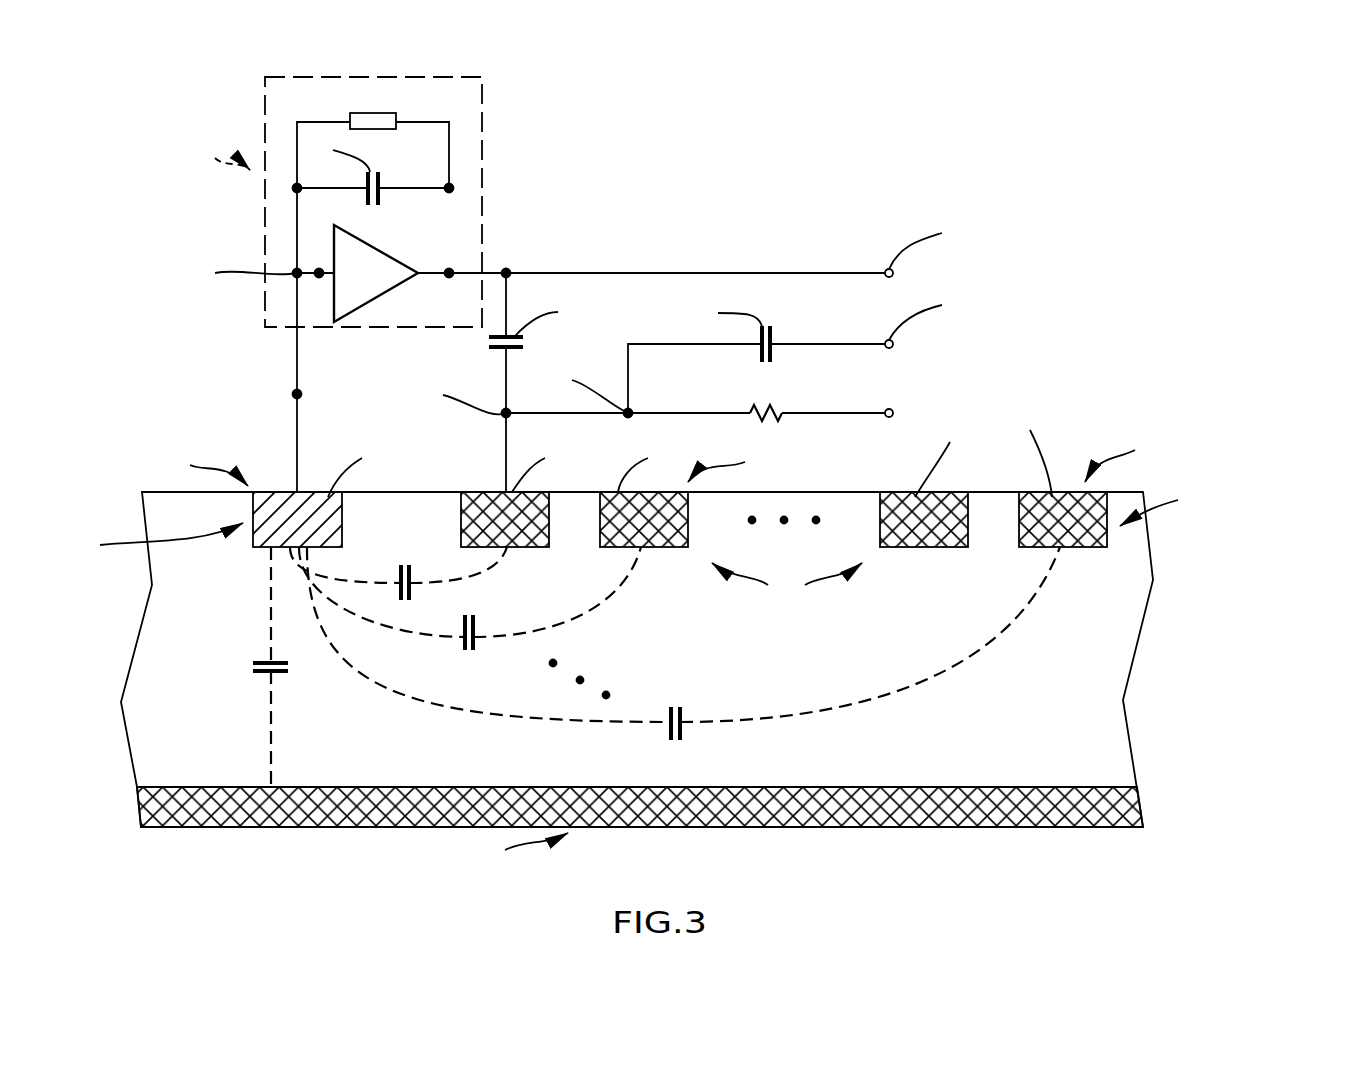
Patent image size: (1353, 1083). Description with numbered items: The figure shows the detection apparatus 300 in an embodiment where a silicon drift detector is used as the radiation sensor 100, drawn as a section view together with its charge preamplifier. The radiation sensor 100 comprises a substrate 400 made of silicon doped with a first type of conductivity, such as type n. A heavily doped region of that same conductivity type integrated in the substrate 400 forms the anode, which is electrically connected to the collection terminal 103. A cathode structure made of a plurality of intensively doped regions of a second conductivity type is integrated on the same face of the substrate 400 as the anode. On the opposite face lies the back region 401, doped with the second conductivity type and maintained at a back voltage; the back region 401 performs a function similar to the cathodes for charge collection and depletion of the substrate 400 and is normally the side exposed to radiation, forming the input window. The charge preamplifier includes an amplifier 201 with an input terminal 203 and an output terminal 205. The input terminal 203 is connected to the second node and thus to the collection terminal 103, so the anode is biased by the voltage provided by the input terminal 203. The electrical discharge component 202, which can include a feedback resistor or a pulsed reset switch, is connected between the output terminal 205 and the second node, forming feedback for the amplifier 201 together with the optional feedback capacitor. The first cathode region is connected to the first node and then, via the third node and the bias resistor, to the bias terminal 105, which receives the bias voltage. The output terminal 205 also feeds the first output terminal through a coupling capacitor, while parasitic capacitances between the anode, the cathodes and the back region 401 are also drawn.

The detection apparatus 300 is at (584, 284).
The electrical discharge component 202 is at (394, 70).
The amplifier 201 is at (386, 257).
The output terminal 205 is at (504, 235).
The input terminal 203 is at (338, 329).
The collection terminal 103 is at (246, 382).
The bias terminal 105 is at (932, 384).
The radiation sensor 100 is at (693, 650).
The substrate 400 is at (677, 659).
The back region 401 is at (640, 844).